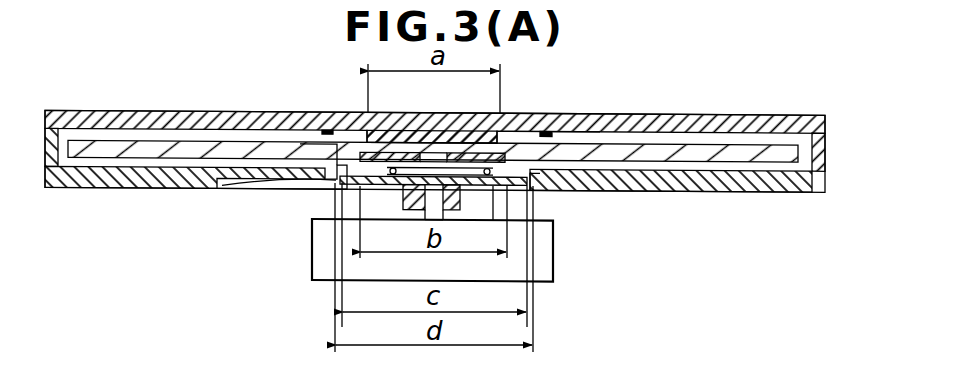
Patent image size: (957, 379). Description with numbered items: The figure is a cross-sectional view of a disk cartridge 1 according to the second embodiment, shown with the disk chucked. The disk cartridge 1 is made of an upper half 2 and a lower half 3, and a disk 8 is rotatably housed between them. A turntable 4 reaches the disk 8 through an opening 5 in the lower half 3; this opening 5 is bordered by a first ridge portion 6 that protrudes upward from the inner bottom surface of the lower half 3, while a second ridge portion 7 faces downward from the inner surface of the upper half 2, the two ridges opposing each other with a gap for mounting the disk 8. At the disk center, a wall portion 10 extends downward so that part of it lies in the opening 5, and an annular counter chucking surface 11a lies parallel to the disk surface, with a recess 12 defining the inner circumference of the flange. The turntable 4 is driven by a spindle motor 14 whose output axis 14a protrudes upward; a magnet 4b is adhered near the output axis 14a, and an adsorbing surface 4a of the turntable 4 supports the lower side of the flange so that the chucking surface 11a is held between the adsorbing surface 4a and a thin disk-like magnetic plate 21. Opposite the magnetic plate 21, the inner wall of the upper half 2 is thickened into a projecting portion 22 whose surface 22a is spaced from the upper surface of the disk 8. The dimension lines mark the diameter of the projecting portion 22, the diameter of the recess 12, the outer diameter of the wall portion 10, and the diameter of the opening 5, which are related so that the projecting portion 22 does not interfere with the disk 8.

The disk cartridge 1 is at (829, 131).
The upper half 2 is at (782, 113).
The lower half 3 is at (806, 192).
The turntable 4 is at (346, 186).
The adsorbing surface 4a is at (495, 193).
The magnet 4b is at (392, 191).
The opening 5 is at (532, 191).
The first ridge portion 6 is at (238, 186).
The second ridge portion 7 is at (345, 160).
The disk 8 is at (703, 139).
The wall portion 10 is at (592, 128).
The counter chucking surface 11a is at (326, 129).
The recess 12 is at (449, 139).
The spindle motor 14 is at (322, 259).
The output axis 14a is at (426, 221).
The magnetic plate 21 is at (372, 158).
The projecting portion 22 is at (500, 150).
The surface of the projecting portion 22a is at (401, 150).